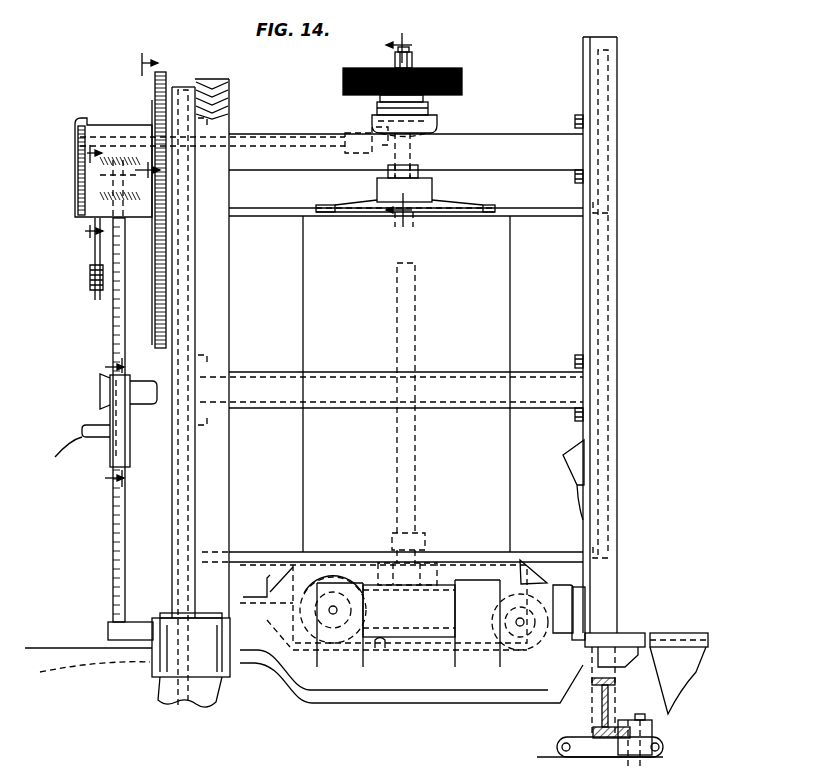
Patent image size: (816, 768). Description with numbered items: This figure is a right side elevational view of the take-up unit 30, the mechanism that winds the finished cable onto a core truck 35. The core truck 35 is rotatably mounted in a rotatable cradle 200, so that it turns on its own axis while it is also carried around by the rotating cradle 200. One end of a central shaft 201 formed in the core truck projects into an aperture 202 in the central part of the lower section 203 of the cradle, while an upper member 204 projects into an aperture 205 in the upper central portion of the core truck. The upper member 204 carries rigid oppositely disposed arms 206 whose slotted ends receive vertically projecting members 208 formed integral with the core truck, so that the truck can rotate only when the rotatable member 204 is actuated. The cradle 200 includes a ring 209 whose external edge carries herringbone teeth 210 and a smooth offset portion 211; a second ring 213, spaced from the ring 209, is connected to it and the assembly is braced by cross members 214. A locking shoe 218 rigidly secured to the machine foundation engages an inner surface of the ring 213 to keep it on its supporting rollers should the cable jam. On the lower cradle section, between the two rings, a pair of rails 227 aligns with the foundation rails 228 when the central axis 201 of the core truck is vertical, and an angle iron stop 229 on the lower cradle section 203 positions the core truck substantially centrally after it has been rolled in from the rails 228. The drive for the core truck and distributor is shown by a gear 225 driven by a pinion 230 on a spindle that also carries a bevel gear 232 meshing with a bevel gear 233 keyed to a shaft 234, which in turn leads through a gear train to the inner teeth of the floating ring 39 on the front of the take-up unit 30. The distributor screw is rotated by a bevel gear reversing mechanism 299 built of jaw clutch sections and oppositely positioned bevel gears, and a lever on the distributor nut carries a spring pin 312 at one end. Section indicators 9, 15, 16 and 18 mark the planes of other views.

The section line 9 is at (407, 129).
The section line 15 is at (126, 416).
The rack / section line 16 is at (89, 397).
The section line 18 is at (141, 117).
The take-up unit 30 is at (474, 72).
The core truck 35 is at (508, 298).
The floating ring 39 is at (152, 94).
The rotatable cradle 200 is at (505, 100).
The central shaft 201 is at (397, 454).
The aperture 202 is at (424, 568).
The lower section of the cradle 203 is at (372, 585).
The upper member 204 is at (432, 191).
The aperture 205 is at (395, 219).
The arms 206 is at (362, 204).
The vertically projecting members 208 is at (322, 204).
The ring 209 is at (229, 100).
The herringbone teeth 210 is at (212, 78).
The smooth offset portion 211 is at (178, 87).
The ring 213 is at (620, 40).
The cross members 214 is at (514, 133).
The locking shoe 218 is at (652, 730).
The gear 225 is at (420, 68).
The rails 227 is at (382, 649).
The rails 228 is at (688, 633).
The angle iron stop 229 is at (263, 578).
The pinion 230 is at (388, 72).
The bevel gear 232 is at (437, 120).
The bevel gear 233 is at (372, 122).
The shaft 234 is at (250, 136).
The bevel gear reversing mechanism 299 is at (98, 205).
The spring pin 312 is at (80, 444).